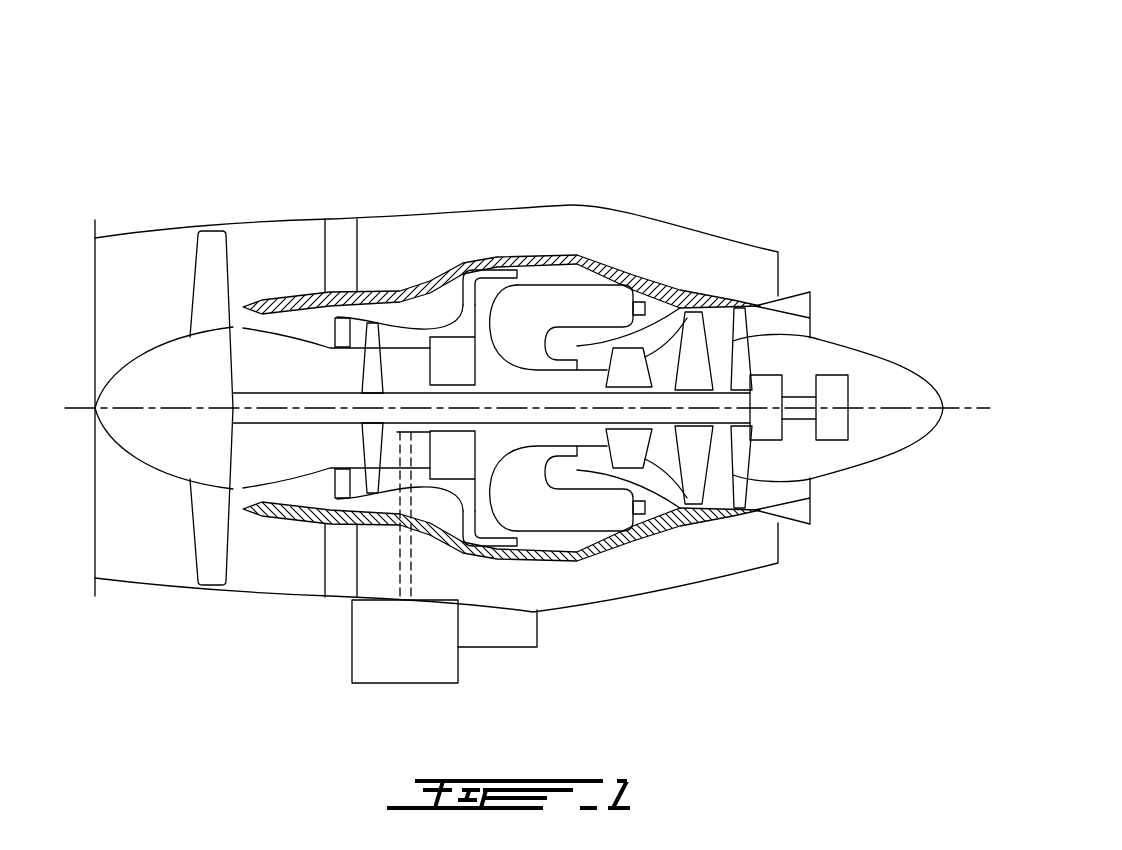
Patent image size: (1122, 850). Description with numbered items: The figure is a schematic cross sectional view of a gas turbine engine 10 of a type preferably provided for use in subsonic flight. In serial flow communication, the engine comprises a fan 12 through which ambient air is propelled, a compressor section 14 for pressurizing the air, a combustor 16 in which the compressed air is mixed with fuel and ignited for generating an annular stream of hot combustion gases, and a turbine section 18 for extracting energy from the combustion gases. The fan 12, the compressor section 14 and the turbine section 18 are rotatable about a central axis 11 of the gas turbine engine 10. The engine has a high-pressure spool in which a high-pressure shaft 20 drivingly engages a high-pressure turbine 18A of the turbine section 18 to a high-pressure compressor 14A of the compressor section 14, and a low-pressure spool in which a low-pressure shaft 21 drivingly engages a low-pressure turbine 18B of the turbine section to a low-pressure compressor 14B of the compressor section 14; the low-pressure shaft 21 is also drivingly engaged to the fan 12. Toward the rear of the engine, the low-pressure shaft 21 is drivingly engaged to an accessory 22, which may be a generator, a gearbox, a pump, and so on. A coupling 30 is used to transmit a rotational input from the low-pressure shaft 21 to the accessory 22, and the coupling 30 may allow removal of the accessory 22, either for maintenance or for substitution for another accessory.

The gas turbine engine 10 is at (706, 115).
The central axis 11 is at (972, 405).
The fan 12 is at (205, 522).
The compressor section 14 is at (380, 400).
The high-pressure compressor 14A is at (453, 470).
The low-pressure compressor 14B is at (373, 452).
The combustor 16 is at (562, 302).
The turbine section 18 is at (679, 388).
The high-pressure turbine 18A is at (633, 363).
The low-pressure turbine 18B is at (693, 343).
The high-pressure shaft 20 is at (515, 525).
The low-pressure shaft 21 is at (283, 393).
The accessory 22 is at (830, 375).
The coupling 30 is at (765, 373).